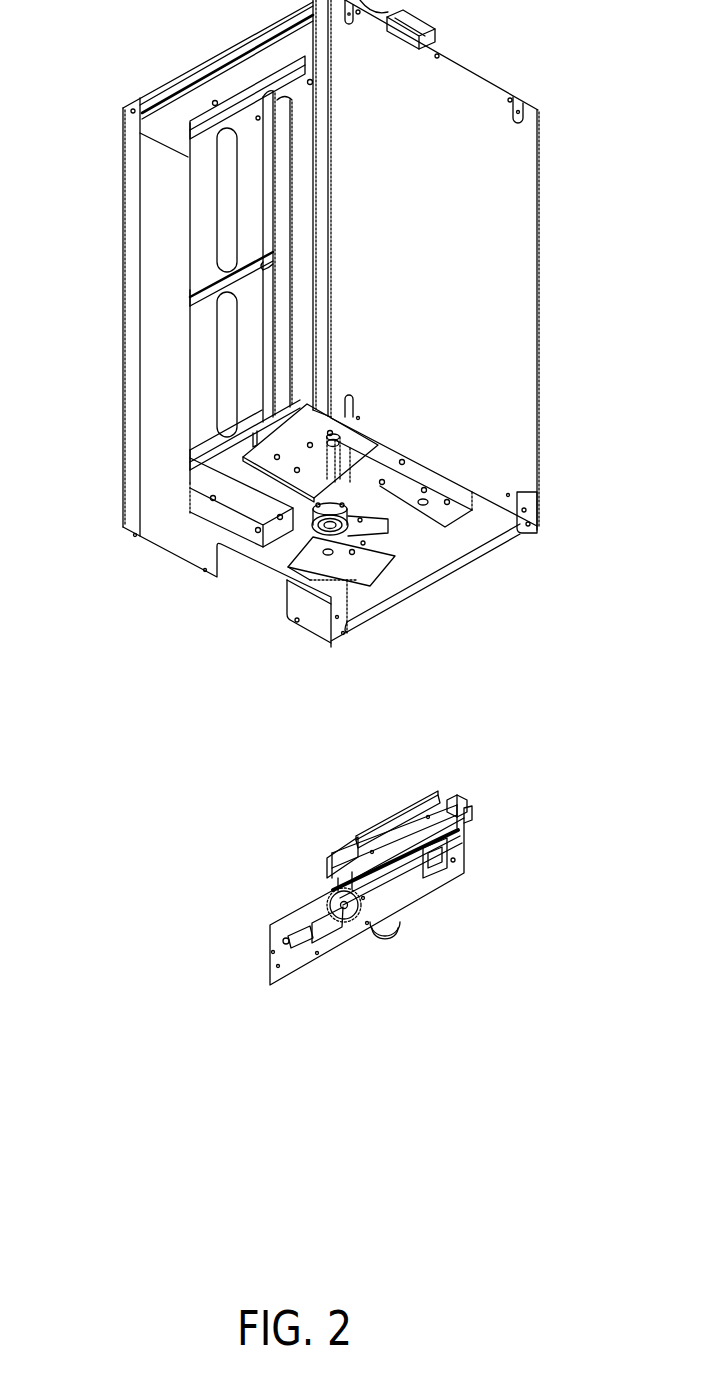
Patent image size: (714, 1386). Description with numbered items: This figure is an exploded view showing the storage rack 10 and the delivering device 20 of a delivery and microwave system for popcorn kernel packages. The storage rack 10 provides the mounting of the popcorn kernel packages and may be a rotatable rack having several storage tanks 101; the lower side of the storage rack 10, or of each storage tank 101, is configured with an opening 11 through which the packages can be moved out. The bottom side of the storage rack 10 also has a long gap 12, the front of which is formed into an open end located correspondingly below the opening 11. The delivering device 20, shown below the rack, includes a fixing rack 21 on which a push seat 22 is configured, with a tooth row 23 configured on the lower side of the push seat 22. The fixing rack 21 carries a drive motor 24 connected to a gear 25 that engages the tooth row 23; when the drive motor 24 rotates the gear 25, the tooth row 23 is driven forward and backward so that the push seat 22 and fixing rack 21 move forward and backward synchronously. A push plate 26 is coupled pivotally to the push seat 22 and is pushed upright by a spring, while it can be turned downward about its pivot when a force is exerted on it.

The storage rack 10 is at (207, 258).
The storage tank 101 is at (225, 358).
The opening 11 is at (225, 461).
The long gap 12 is at (241, 478).
The delivering device 20 is at (430, 908).
The fixing rack 21 is at (318, 957).
The push seat 22 is at (371, 836).
The tooth row 23 is at (418, 855).
The drive motor 24 is at (388, 937).
The gear 25 is at (341, 913).
The push plate 26 is at (343, 838).